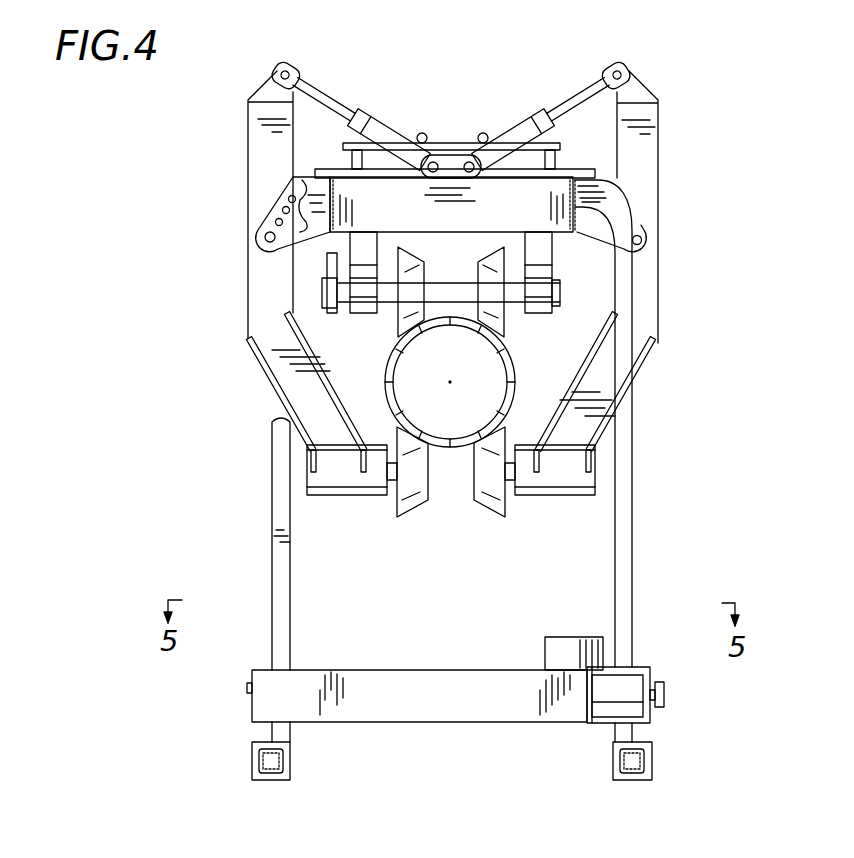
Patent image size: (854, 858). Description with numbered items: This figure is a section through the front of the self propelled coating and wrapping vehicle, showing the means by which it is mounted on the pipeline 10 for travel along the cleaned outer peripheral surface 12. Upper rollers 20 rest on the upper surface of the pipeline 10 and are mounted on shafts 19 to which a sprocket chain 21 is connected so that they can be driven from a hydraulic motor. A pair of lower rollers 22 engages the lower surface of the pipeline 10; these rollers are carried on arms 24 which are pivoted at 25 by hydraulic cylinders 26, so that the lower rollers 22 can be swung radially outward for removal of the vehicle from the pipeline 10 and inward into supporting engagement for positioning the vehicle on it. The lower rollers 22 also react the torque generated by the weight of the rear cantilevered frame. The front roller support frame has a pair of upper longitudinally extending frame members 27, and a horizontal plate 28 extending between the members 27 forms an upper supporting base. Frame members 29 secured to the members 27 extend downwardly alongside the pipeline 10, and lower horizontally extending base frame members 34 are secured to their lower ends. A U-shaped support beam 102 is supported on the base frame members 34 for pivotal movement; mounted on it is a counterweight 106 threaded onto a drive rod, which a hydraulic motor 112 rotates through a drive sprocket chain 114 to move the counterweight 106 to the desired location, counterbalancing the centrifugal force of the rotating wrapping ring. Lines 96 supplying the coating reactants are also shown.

The pipeline 10 is at (501, 366).
The outer peripheral surface 12 is at (512, 398).
The shafts 19 is at (388, 304).
The upper rollers 20 is at (479, 266).
The sprocket chain 21 is at (330, 312).
The lower rollers 22 is at (485, 505).
The arms 24 is at (258, 300).
The pivot 25 is at (264, 236).
The hydraulic cylinders 26 is at (378, 112).
The upper longitudinally extending frame members 27 is at (330, 208).
The horizontal plate 28 is at (584, 172).
The frame members 29 is at (634, 557).
The lower horizontally extending base frame members 34 is at (252, 766).
The lines 96 is at (422, 133).
The U-shaped support beam 102 is at (462, 723).
The counterweight 106 is at (571, 636).
The hydraulic motor 112 is at (637, 669).
The drive sprocket chain 114 is at (666, 696).